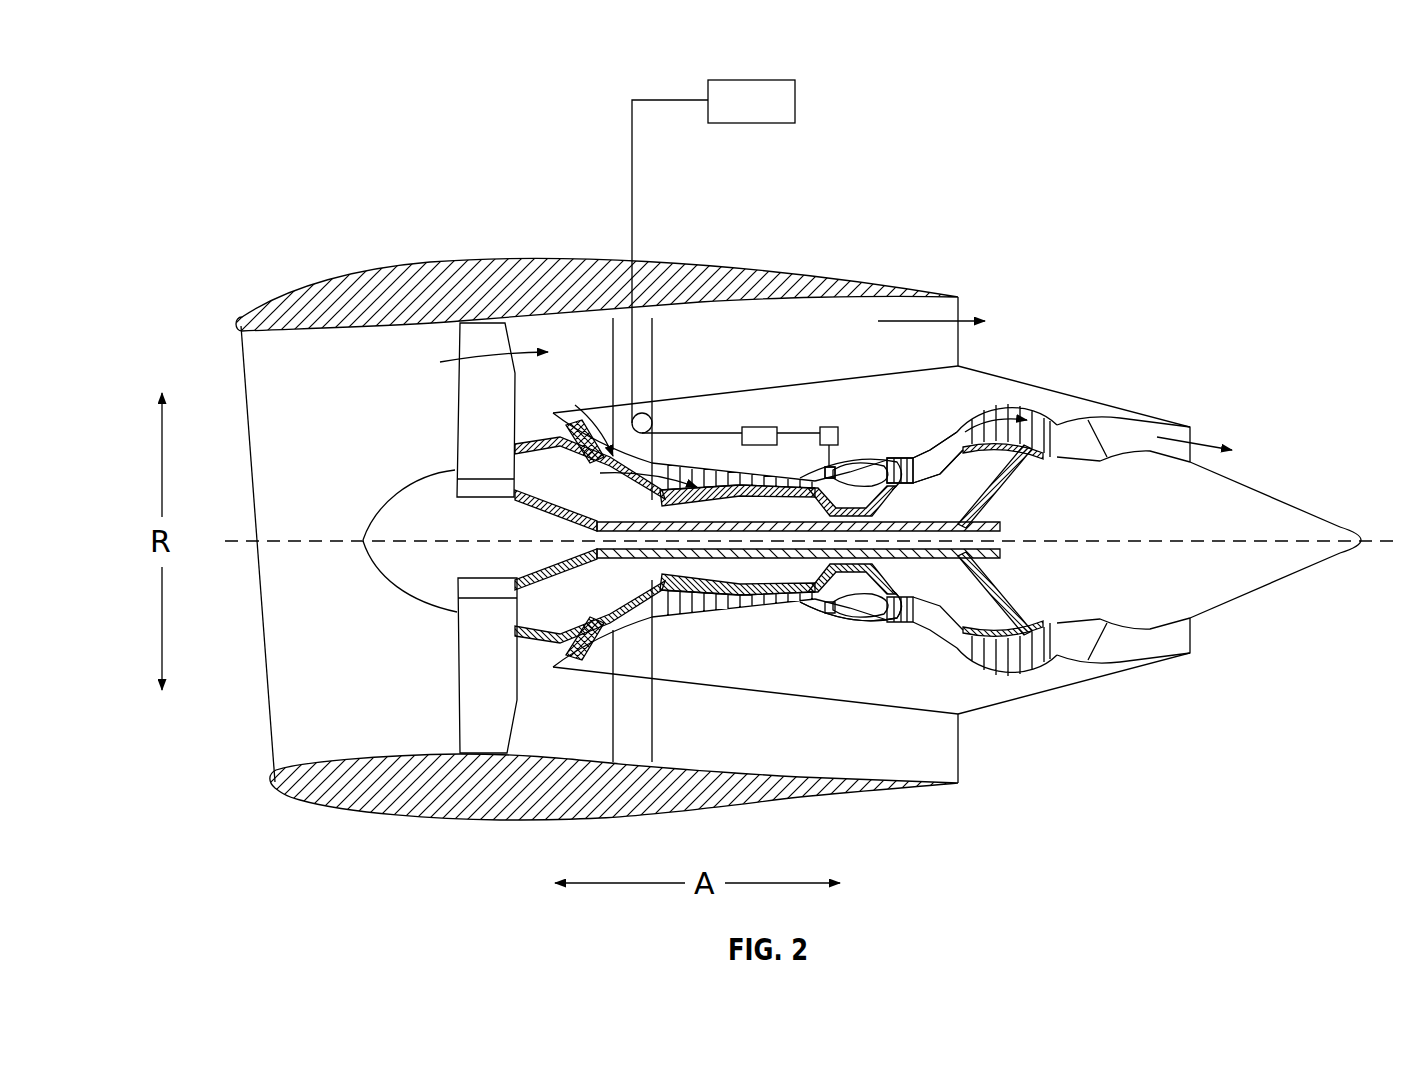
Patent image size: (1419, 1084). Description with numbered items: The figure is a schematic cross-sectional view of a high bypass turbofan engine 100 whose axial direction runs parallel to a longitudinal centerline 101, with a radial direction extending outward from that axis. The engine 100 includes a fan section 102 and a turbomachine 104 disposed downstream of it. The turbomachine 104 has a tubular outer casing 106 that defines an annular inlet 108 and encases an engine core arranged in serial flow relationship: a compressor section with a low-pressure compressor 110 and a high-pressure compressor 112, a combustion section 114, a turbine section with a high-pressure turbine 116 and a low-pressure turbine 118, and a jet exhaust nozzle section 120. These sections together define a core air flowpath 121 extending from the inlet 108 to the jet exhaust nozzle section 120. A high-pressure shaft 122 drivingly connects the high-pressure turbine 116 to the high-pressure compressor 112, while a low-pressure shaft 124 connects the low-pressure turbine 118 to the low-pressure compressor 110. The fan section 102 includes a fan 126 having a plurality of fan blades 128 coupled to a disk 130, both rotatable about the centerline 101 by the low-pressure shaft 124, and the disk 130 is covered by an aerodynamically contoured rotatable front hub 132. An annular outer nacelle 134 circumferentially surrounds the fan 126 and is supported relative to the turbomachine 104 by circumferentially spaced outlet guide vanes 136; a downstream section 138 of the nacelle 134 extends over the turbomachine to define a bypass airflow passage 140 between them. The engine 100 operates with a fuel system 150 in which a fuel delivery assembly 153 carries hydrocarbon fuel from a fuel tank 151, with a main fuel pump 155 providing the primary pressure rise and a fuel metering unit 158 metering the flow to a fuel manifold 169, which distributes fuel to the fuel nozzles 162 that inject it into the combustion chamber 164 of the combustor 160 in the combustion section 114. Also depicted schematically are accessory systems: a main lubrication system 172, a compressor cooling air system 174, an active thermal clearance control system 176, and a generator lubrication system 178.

The turbofan engine 100 is at (1078, 228).
The longitudinal centerline 101 is at (1185, 540).
The fan section 102 is at (433, 352).
The turbomachine 104 is at (766, 318).
The tubular outer casing 106 is at (815, 705).
The inlet 108 is at (555, 648).
The low-pressure compressor 110 is at (600, 655).
The high-pressure compressor 112 is at (700, 613).
The combustion section 114 is at (830, 617).
The high-pressure turbine 116 is at (928, 617).
The low-pressure turbine 118 is at (1040, 673).
The jet exhaust nozzle section 120 is at (1103, 640).
The core air flowpath 121 is at (633, 607).
The high-pressure shaft 122 is at (908, 488).
The low-pressure shaft 124 is at (1000, 483).
The fan 126 is at (432, 390).
The fan blades 128 is at (453, 638).
The disk 130 is at (481, 497).
The rotatable front hub 132 is at (402, 590).
The outer nacelle 134 is at (553, 822).
The outlet guide vanes 136 is at (652, 347).
The downstream section of the nacelle 138 is at (870, 278).
The bypass airflow passage 140 is at (855, 340).
The fuel system 150 is at (660, 253).
The fuel tank 151 is at (770, 80).
The fuel delivery assembly 153 is at (633, 180).
The main fuel pump 155 is at (653, 425).
The fuel metering unit 158 is at (755, 427).
The combustor 160 is at (857, 448).
The fuel nozzles 162 is at (832, 476).
The combustion chamber 164 is at (878, 485).
The fuel manifold 169 is at (829, 427).
The main lubrication system 172 is at (960, 401).
The compressor cooling air system 174 is at (754, 675).
The active thermal clearance control system 176 is at (890, 657).
The generator lubrication system 178 is at (877, 700).